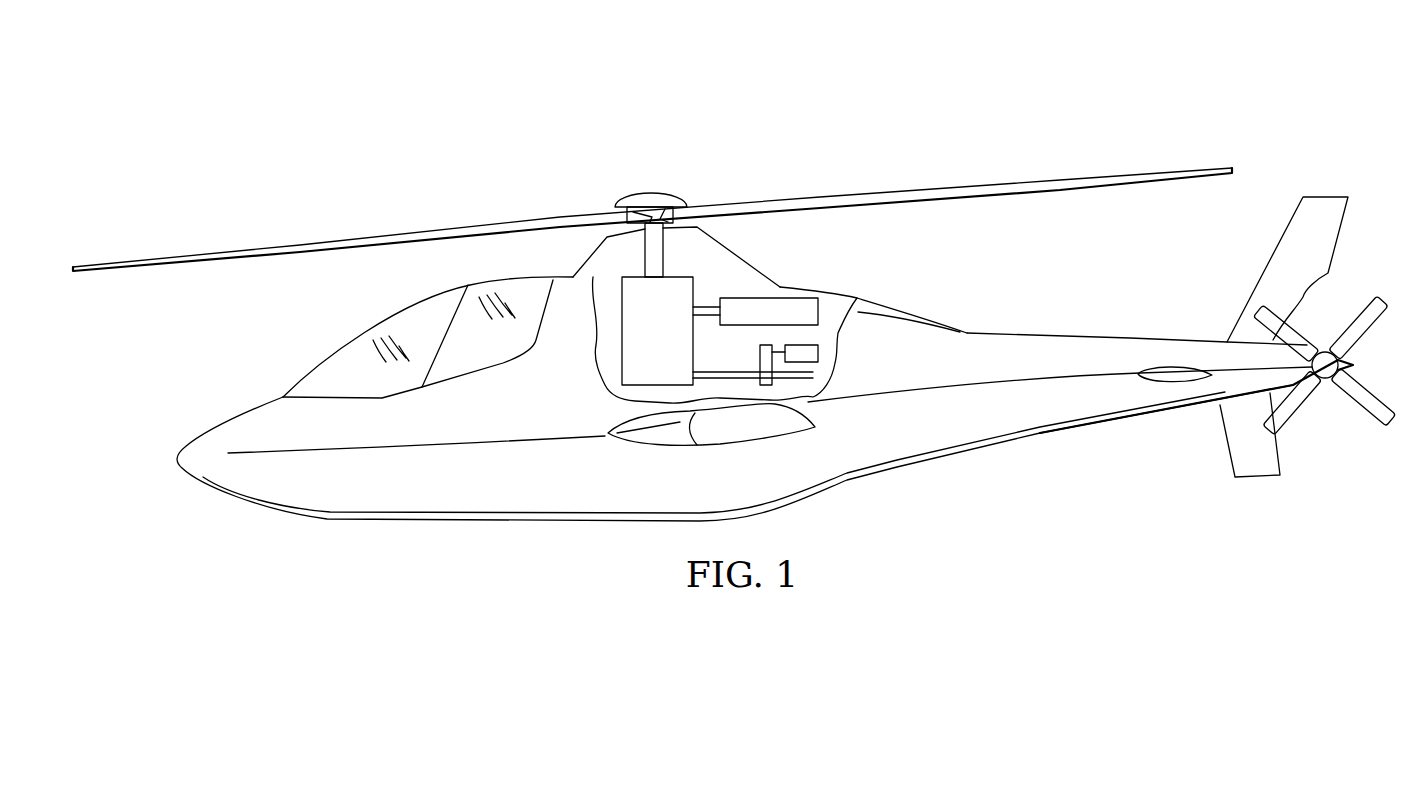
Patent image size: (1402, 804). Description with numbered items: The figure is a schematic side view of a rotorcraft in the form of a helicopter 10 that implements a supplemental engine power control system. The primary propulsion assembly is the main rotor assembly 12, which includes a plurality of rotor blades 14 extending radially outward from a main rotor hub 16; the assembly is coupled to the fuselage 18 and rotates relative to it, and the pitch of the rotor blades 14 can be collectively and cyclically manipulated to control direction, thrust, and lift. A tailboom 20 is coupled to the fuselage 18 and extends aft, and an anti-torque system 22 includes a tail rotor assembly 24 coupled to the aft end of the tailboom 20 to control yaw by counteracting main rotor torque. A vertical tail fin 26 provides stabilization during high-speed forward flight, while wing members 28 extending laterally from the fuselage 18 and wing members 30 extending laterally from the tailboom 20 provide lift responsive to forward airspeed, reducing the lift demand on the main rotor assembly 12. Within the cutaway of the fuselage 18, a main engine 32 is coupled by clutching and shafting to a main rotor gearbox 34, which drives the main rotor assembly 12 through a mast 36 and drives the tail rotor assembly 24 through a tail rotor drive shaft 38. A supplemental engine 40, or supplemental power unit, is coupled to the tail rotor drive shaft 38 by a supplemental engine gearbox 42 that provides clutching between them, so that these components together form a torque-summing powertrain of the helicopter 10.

The helicopter 10 is at (1005, 90).
The main rotor assembly 12 is at (852, 192).
The rotor blades 14 is at (432, 230).
The main rotor hub 16 is at (648, 193).
The fuselage 18 is at (490, 506).
The tailboom 20 is at (1003, 420).
The anti-torque system 22 is at (1360, 298).
The tail rotor assembly 24 is at (1360, 413).
The vertical tail fin 26 is at (1325, 197).
The wing members 28 is at (680, 447).
The wing members 30 is at (1168, 367).
The main engine 32 is at (802, 298).
The main rotor gearbox 34 is at (641, 347).
The mast 36 is at (643, 265).
The tail rotor drive shaft 38 is at (813, 387).
The supplemental engine 40 is at (840, 342).
The supplemental engine gearbox 42 is at (760, 358).